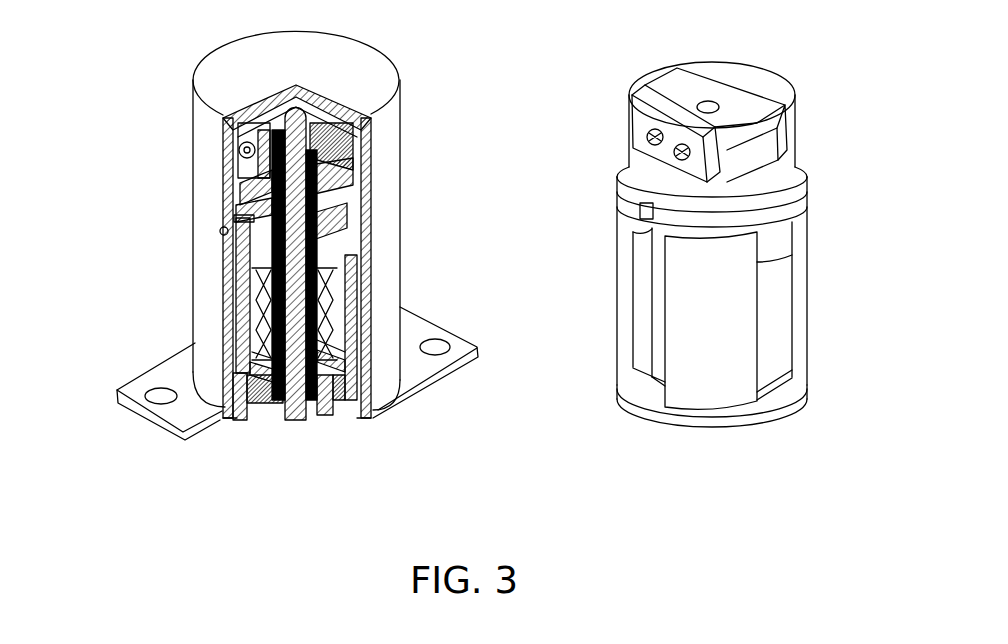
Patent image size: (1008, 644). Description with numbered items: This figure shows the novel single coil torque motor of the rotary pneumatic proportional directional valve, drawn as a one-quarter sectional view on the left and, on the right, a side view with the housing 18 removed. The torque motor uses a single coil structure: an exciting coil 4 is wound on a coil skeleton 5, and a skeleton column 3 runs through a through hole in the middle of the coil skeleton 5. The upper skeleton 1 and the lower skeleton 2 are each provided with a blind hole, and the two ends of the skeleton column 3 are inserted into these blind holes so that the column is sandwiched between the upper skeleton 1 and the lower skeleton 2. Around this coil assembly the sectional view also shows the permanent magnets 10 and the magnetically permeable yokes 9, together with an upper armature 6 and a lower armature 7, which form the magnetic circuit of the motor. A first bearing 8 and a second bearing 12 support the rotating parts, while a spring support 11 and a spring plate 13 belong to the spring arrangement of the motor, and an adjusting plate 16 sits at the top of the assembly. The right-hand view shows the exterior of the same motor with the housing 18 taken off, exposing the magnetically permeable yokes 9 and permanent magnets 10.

The upper skeleton 1 is at (235, 213).
The lower skeleton 2 is at (370, 388).
The skeleton column 3 is at (367, 298).
The exciting coil 4 is at (250, 307).
The coil skeleton 5 is at (250, 272).
The upper armature 6 is at (368, 258).
The lower armature 7 is at (258, 400).
The first bearing 8 is at (313, 400).
The magnetically permeable yoke 9 is at (717, 385).
The permanent magnet 10 is at (232, 350).
The spring support 11 is at (368, 205).
The second bearing 12 is at (368, 177).
The spring plate 13 is at (367, 133).
The adjusting plate 16 is at (238, 144).
The housing 18 is at (137, 388).